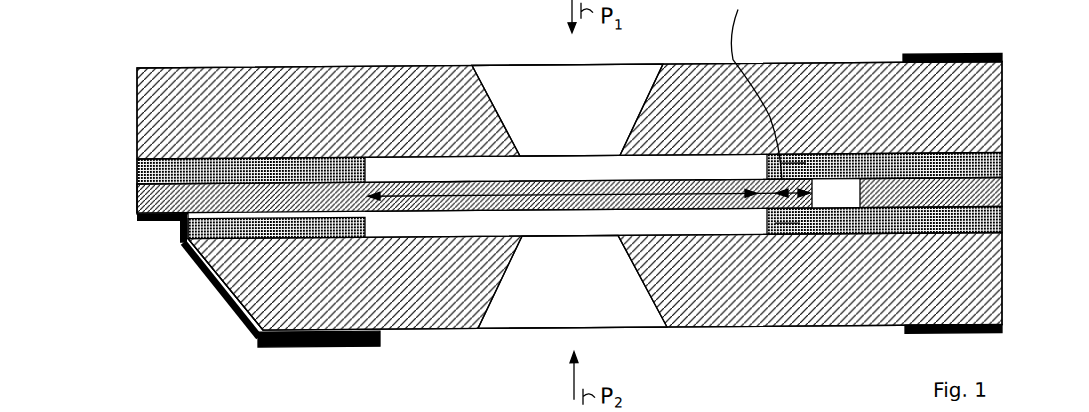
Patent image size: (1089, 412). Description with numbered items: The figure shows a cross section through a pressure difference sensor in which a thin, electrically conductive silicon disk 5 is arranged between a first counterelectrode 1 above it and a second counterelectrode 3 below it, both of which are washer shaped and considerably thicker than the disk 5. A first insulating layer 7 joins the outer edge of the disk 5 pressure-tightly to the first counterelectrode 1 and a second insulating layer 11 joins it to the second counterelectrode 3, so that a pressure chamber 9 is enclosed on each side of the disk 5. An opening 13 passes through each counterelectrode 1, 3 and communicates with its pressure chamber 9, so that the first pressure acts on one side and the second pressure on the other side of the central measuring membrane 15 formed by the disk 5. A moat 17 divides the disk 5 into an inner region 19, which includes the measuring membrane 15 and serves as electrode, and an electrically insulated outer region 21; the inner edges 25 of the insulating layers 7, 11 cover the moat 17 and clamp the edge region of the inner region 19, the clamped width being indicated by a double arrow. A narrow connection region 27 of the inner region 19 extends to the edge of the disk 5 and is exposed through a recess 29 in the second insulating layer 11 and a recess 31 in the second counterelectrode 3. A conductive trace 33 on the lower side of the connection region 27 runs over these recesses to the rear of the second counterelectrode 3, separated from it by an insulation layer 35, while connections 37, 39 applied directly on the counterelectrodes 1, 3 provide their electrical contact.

The first counterelectrode 1 is at (795, 85).
The second counterelectrode 3 is at (722, 322).
The disk 5 is at (301, 204).
The first insulating layer 7 is at (1004, 166).
The pressure chamber 9 is at (552, 185).
The second insulating layer 11 is at (1003, 222).
The opening 13 is at (573, 128).
The measuring membrane 15 is at (453, 185).
The moat 17 is at (836, 193).
The inner region 19 is at (710, 184).
The outer region 21 is at (1003, 194).
The inner edges 25 is at (793, 172).
The connection region 27 is at (136, 193).
The recess 29 is at (137, 249).
The recess 31 is at (153, 307).
The conductive trace 33 is at (220, 306).
The insulation layer 35 is at (275, 341).
The connection 37 is at (946, 58).
The connection 39 is at (972, 341).